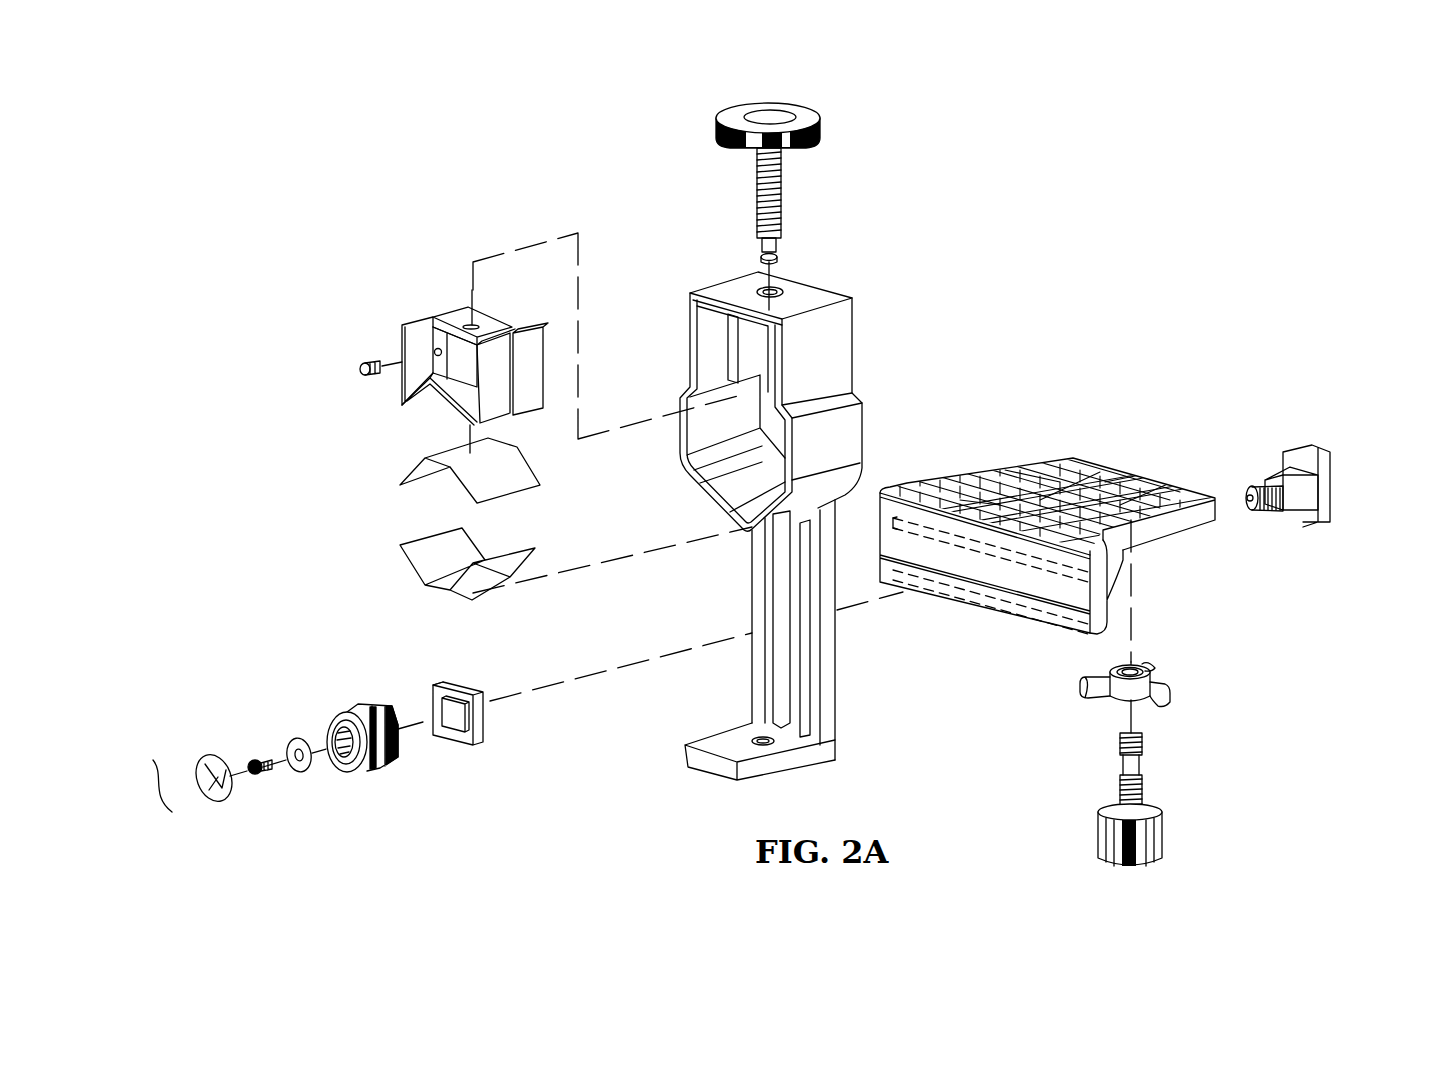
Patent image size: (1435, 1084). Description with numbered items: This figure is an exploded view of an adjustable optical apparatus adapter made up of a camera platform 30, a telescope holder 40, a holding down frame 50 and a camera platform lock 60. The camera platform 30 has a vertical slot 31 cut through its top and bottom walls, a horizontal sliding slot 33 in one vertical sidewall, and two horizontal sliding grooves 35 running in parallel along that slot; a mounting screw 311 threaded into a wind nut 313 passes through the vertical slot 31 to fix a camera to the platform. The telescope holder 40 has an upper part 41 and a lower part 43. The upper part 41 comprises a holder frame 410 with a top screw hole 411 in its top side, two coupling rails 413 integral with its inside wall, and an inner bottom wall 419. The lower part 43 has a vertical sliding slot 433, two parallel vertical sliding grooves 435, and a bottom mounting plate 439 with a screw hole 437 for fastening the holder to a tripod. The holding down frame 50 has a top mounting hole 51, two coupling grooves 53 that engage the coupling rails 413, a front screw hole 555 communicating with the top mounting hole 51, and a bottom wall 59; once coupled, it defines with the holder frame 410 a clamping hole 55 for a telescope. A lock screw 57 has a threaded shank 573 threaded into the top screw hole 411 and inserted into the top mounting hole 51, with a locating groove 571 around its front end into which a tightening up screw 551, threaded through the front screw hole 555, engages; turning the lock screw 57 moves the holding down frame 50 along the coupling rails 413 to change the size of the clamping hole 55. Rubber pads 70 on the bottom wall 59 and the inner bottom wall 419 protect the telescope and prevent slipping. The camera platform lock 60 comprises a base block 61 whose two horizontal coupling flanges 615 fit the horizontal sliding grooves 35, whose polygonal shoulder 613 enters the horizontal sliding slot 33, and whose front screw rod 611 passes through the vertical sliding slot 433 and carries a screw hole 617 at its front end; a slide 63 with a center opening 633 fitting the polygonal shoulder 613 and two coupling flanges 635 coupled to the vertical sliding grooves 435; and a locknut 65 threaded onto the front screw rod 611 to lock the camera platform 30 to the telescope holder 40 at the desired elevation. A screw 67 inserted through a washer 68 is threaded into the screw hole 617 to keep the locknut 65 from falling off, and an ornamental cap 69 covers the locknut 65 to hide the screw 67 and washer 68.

The camera platform 30 is at (1040, 559).
The vertical slot 31 is at (1133, 492).
The horizontal sliding slot 33 is at (1028, 582).
The horizontal sliding grooves 35 is at (1067, 628).
The mounting screw 311 is at (1163, 810).
The wind nut 313 is at (1167, 686).
The telescope holder 40 is at (772, 529).
The upper part 41 is at (759, 387).
The holder frame 410 is at (677, 415).
The top screw hole 411 is at (782, 291).
The coupling rails 413 is at (728, 337).
The inner bottom wall 419 is at (727, 490).
The lower part 43 is at (798, 657).
The vertical sliding slot 433 is at (793, 656).
The vertical sliding grooves 435 is at (805, 700).
The screw hole 437 is at (773, 742).
The bottom mounting plate 439 is at (795, 768).
The holding down frame 50 is at (395, 359).
The top mounting hole 51 is at (472, 312).
The coupling grooves 53 is at (432, 291).
The clamping hole 55 is at (395, 531).
The tightening up screw 551 is at (360, 368).
The front screw hole 555 is at (435, 351).
The lock screw 57 is at (812, 203).
The locating groove 571 is at (779, 254).
The threaded shank 573 is at (782, 205).
The bottom wall 59 is at (427, 397).
The camera platform lock 60 is at (332, 746).
The base block 61 is at (1323, 493).
The front screw rod 611 is at (1248, 493).
The polygonal shoulder 613 is at (1303, 497).
The horizontal coupling flanges 615 is at (1332, 453).
The screw hole 617 is at (1251, 503).
The slide 63 is at (477, 715).
The center opening 633 is at (447, 730).
The coupling flanges 635 is at (477, 693).
The locknut 65 is at (355, 773).
The screw 67 is at (252, 777).
The washer 68 is at (294, 740).
The ornamental cap 69 is at (204, 795).
The rubber pads 70 is at (420, 460).